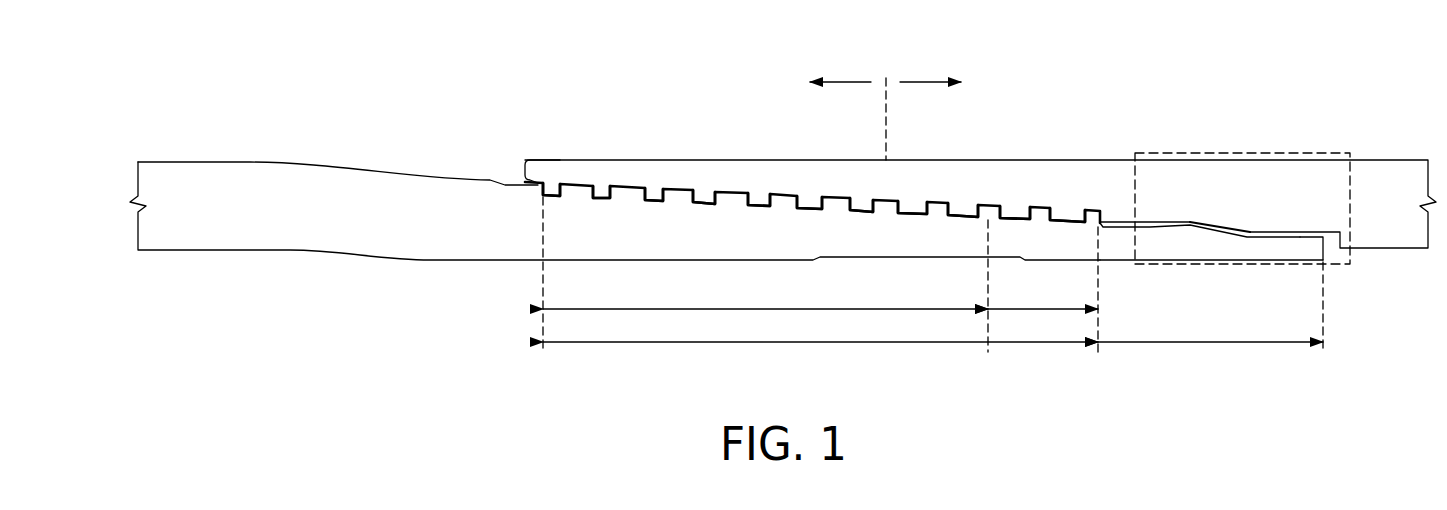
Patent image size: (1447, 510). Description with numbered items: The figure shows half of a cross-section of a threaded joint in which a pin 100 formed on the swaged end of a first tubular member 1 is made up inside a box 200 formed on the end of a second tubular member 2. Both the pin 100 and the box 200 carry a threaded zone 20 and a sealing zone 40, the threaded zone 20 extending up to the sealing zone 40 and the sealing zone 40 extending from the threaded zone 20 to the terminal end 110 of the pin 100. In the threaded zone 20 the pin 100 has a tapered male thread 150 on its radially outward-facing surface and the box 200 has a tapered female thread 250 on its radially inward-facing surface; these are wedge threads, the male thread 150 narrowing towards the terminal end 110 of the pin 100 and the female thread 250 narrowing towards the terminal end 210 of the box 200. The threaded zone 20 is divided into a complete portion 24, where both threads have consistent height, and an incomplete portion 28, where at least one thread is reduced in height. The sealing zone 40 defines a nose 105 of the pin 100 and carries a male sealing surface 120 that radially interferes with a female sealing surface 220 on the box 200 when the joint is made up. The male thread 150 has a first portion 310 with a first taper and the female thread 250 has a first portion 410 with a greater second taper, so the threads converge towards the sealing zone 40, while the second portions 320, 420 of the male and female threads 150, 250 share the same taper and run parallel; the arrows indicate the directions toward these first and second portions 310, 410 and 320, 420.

The first tubular member 1 is at (150, 268).
The second tubular member 2 is at (1104, 133).
The threaded zone 20 is at (817, 344).
The complete portion 24 is at (757, 308).
The incomplete portion 28 is at (1065, 308).
The sealing zone 40 is at (1212, 344).
The pin 100 is at (207, 173).
The nose 105 is at (1150, 258).
The terminal end of the pin 110 is at (1326, 247).
The male sealing surface 120 is at (1258, 230).
The male thread 150 is at (730, 200).
The box 200 is at (1393, 175).
The terminal end of the box 210 is at (523, 172).
The female sealing surface 220 is at (1216, 234).
The female thread 250 is at (655, 200).
The first portion of the male thread 310 is at (978, 62).
The second portion of the male thread 320 is at (794, 62).
The first portion of the female thread 410 is at (932, 82).
The second portion of the female thread 420 is at (843, 82).